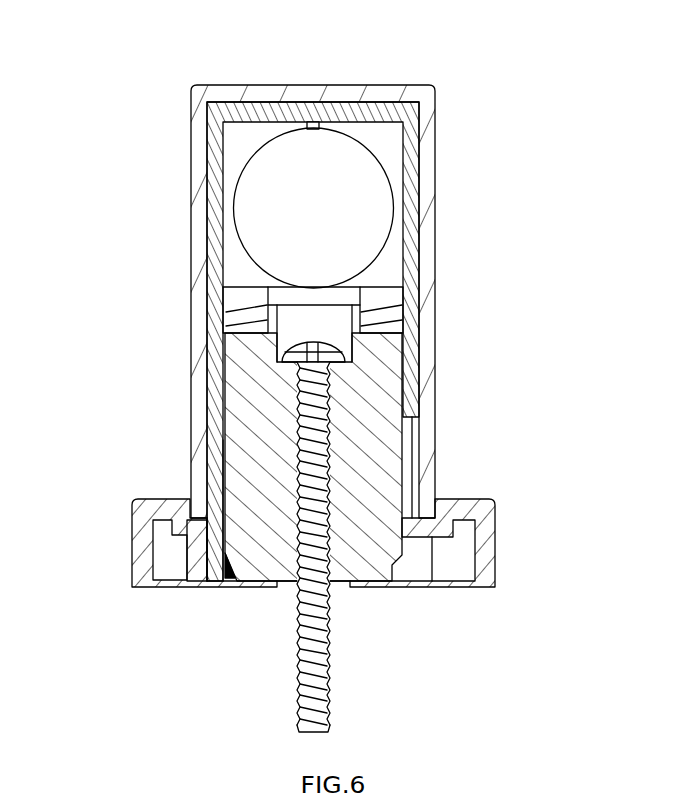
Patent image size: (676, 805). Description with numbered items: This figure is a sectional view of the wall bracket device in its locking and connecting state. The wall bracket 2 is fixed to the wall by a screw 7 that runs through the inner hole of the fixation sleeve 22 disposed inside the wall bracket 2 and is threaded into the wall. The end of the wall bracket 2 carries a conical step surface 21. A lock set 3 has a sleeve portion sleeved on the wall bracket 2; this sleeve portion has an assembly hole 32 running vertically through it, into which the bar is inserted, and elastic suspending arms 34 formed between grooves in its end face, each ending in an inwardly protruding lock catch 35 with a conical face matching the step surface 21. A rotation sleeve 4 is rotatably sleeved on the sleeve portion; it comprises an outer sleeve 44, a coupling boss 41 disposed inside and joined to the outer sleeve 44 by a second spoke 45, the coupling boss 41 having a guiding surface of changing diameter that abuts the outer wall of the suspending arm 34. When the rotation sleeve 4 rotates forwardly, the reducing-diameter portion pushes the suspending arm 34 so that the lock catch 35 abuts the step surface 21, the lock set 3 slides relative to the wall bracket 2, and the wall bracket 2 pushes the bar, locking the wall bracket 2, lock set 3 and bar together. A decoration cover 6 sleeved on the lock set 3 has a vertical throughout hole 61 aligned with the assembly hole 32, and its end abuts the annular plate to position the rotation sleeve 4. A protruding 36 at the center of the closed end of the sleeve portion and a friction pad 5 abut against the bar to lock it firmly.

The wall bracket 2 is at (232, 413).
The lock set 3 is at (408, 290).
The rotation sleeve 4 is at (310, 570).
The friction pad 5 is at (240, 307).
The decoration cover 6 is at (430, 210).
The screw 7 is at (312, 505).
The step surface 21 is at (233, 568).
The fixation sleeve 22 is at (422, 515).
The assembly hole 32 is at (417, 159).
The throughout hole 61 is at (375, 157).
The suspending arm 34 is at (213, 505).
The lock catch 35 is at (222, 577).
The protruding 36 is at (313, 127).
The coupling boss 41 is at (195, 552).
The outer sleeve 44 is at (143, 557).
The second spoke 45 is at (457, 512).